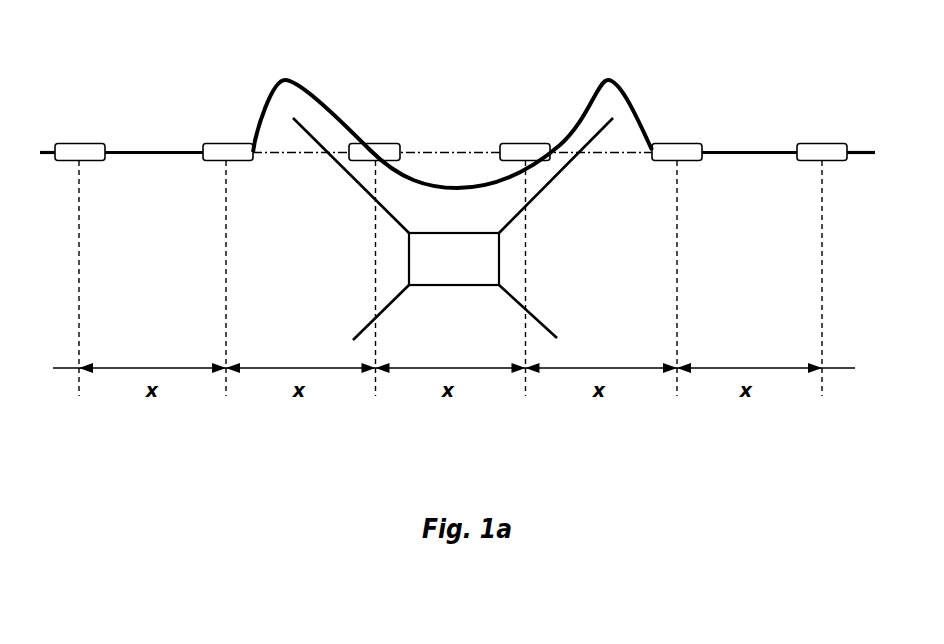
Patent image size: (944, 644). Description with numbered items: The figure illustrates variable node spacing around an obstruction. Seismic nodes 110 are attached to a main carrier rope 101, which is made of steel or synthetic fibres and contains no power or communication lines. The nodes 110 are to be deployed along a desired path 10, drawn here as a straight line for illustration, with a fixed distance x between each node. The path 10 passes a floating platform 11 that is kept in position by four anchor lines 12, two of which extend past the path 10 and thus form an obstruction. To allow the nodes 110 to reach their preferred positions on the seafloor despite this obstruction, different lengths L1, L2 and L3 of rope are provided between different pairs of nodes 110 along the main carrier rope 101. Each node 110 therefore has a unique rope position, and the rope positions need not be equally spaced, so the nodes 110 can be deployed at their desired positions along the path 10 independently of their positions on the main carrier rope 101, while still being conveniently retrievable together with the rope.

The desired path 10 is at (740, 150).
The main carrier rope 101 is at (278, 78).
The nodes 110 is at (93, 158).
The floating platform 11 is at (487, 262).
The anchor lines 12 is at (347, 168).
The rope length L1 is at (172, 150).
The rope length L2 is at (425, 178).
The rope length L3 is at (630, 95).